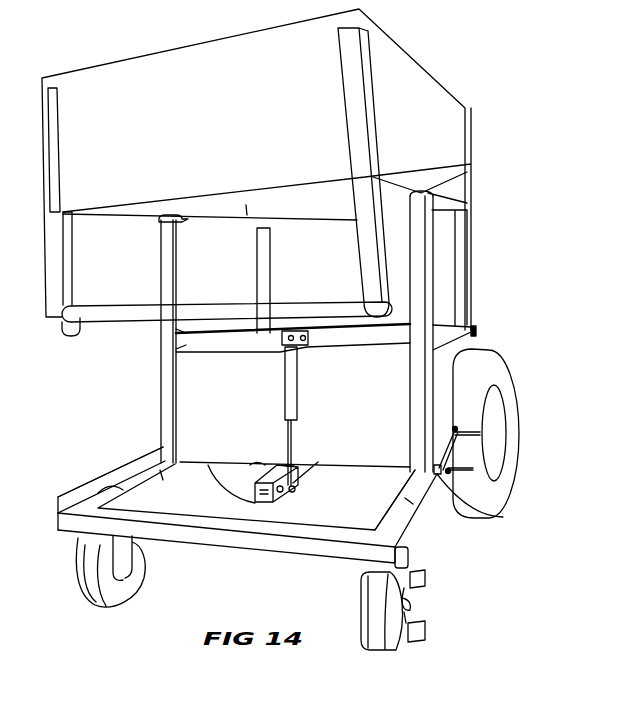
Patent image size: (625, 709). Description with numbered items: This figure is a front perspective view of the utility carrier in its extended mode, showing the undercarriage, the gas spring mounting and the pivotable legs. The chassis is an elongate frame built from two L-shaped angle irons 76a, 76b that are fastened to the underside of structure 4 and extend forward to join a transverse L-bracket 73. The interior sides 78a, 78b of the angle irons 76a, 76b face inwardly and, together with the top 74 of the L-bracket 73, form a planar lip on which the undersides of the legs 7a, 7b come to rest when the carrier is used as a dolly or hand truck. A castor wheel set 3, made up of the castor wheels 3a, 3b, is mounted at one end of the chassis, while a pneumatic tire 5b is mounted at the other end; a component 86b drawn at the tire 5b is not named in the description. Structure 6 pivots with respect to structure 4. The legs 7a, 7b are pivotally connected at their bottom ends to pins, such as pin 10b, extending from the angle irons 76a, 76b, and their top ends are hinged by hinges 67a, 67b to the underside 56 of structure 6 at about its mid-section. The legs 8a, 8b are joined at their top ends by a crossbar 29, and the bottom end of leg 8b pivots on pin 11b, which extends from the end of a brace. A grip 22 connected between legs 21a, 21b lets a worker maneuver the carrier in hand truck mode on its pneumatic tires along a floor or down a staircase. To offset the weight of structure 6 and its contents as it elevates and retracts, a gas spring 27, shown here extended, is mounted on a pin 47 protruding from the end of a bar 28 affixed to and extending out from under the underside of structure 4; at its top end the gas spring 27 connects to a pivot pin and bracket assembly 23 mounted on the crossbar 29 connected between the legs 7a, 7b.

The castor wheel set 3 is at (118, 458).
The castor wheel 3a is at (123, 597).
The castor wheel 3b is at (382, 650).
The structure 4 is at (197, 415).
The pneumatic tire 5b is at (503, 392).
The structure 6 is at (223, 138).
The leg 7a is at (160, 350).
The leg 7b is at (420, 315).
The leg 8a is at (272, 240).
The leg 8b is at (462, 262).
The pin 10b is at (438, 474).
The pin 11b is at (476, 332).
The leg 21a is at (50, 147).
The leg 21b is at (363, 165).
The grip 22 is at (122, 308).
The pivot pin and bracket assembly 23 is at (309, 347).
The gas spring 27 is at (294, 392).
The bar 28 is at (296, 478).
The crossbar 29 is at (195, 340).
The pin 47 is at (291, 487).
The underside 56 is at (247, 210).
The hinge 67a is at (160, 222).
The hinge 67b is at (423, 193).
The transverse L-bracket 73 is at (280, 543).
The top 74 is at (143, 517).
The angle iron 76a is at (97, 478).
The angle iron 76b is at (410, 515).
The interior side 78a is at (163, 478).
The interior side 78b is at (410, 503).
The wheel hub 86b is at (445, 394).